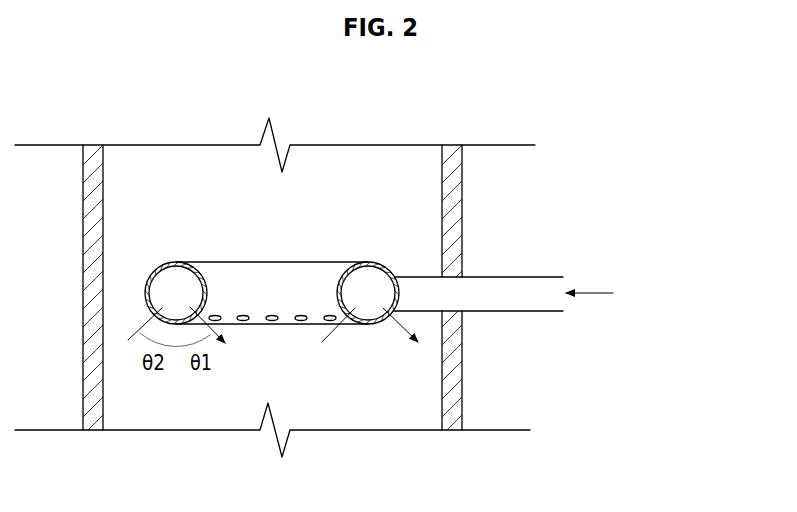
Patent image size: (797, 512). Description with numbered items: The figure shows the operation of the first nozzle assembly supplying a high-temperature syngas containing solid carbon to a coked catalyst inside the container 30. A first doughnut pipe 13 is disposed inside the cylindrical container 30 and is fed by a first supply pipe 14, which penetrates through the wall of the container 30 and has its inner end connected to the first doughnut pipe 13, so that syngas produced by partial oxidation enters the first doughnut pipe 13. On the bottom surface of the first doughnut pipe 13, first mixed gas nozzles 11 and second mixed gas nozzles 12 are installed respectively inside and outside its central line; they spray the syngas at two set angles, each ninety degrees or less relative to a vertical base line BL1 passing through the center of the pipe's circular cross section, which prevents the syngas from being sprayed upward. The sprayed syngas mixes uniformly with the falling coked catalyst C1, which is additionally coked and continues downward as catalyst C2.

The first mixed gas nozzles 11 is at (200, 318).
The second mixed gas nozzles 12 is at (152, 312).
The first doughnut pipe 13 is at (372, 262).
The first supply pipe 14 is at (516, 277).
The container 30 is at (90, 272).
The base line BL1 is at (180, 235).
The coked catalyst C1 is at (345, 165).
The additionally coked catalyst C2 is at (357, 418).